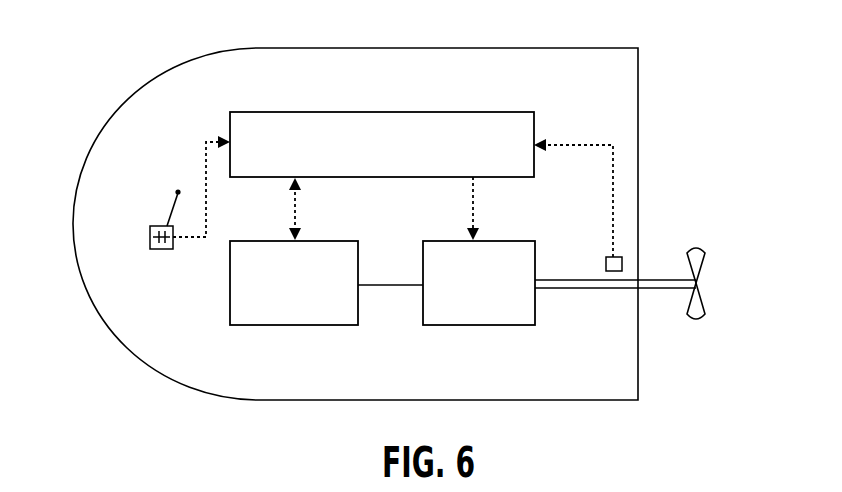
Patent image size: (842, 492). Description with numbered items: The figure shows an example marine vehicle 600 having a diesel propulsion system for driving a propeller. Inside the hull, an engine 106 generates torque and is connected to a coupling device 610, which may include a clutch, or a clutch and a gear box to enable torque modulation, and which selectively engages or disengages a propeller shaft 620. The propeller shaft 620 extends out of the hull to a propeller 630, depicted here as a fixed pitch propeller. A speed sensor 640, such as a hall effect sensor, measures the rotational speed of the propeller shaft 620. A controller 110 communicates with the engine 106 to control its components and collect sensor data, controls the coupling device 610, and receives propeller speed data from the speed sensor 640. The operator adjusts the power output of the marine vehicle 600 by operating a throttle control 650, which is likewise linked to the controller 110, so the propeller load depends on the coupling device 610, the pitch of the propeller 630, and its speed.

The marine vehicle 600 is at (690, 58).
The controller 110 is at (397, 155).
The engine 106 is at (338, 292).
The coupling device 610 is at (522, 305).
The propeller shaft 620 is at (662, 290).
The propeller 630 is at (695, 247).
The speed sensor 640 is at (607, 257).
The throttle control 650 is at (150, 238).